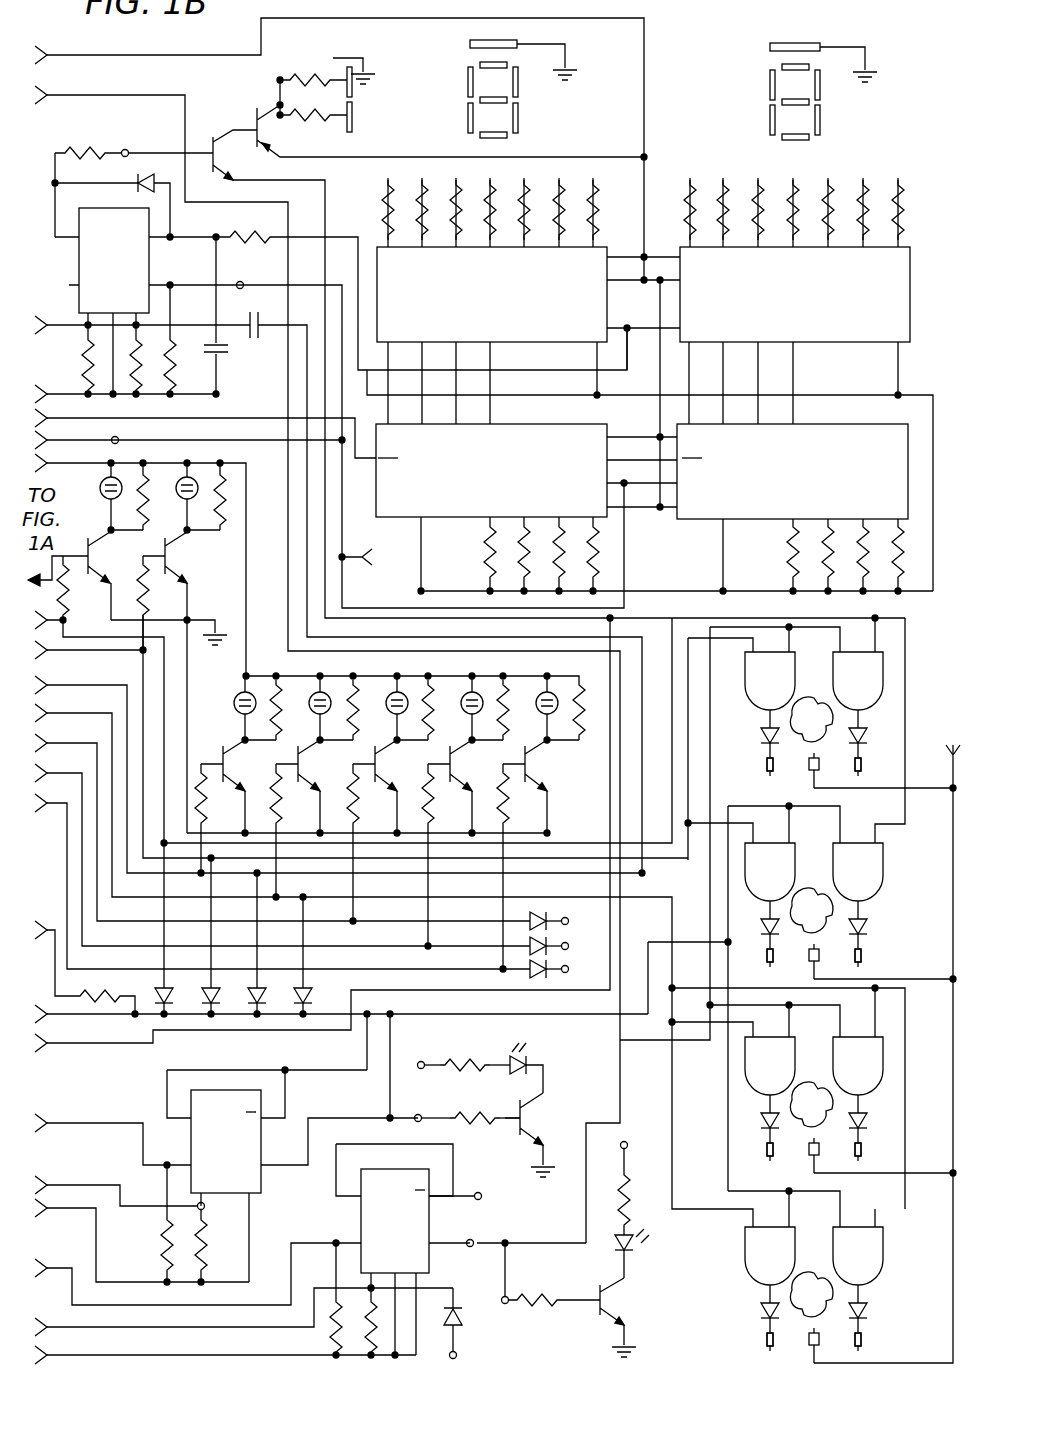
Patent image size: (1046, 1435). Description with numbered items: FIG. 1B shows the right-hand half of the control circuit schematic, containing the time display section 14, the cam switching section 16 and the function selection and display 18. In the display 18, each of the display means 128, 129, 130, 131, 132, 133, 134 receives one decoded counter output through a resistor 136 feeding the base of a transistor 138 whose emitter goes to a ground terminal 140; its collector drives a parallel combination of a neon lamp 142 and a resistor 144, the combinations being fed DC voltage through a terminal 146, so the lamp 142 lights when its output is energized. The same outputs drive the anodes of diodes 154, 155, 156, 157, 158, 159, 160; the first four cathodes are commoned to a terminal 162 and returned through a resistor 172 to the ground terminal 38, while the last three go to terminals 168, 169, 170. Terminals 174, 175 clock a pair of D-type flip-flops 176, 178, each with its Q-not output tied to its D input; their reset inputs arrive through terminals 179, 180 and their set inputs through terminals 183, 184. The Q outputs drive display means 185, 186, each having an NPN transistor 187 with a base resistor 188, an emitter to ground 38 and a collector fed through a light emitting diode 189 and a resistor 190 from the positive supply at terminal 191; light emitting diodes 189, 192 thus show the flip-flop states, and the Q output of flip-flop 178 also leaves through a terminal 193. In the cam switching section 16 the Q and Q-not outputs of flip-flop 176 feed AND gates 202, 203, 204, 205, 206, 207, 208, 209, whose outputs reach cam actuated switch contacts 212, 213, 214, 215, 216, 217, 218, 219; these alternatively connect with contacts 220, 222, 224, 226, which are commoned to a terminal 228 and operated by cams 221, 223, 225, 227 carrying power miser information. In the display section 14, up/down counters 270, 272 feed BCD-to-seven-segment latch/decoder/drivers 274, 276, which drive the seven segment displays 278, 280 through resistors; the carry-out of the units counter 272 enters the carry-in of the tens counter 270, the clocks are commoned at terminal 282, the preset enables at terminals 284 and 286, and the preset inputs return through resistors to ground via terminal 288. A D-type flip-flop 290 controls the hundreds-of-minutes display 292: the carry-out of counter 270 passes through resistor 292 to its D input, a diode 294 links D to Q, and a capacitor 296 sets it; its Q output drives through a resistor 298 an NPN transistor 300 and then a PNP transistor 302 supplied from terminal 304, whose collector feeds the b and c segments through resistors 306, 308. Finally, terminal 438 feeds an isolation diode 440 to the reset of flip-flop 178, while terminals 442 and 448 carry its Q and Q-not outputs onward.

The time display section 14 is at (684, 88).
The cam switching section 16 is at (909, 917).
The function selection and display 18 is at (216, 691).
The ground terminal 38 is at (546, 1168).
The display means 128 is at (124, 559).
The display means 129 is at (200, 559).
The display means 130 is at (260, 777).
The display means 131 is at (335, 777).
The display means 132 is at (412, 777).
The display means 133 is at (487, 777).
The display means 134 is at (562, 777).
The resistor 136 is at (72, 606).
The transistor 138 is at (104, 580).
The ground terminal 140 is at (200, 622).
The neon lamp 142 is at (118, 478).
The resistor 144 is at (146, 502).
The terminal 146 is at (58, 466).
The diode 154 is at (172, 996).
The diode 155 is at (219, 996).
The diode 156 is at (265, 996).
The diode 157 is at (305, 996).
The diode 158 is at (538, 918).
The diode 159 is at (528, 942).
The diode 160 is at (532, 976).
The terminal 162 is at (46, 1017).
The terminal 168 is at (568, 924).
The terminal 169 is at (568, 949).
The terminal 170 is at (568, 972).
The resistor 172 is at (92, 998).
The terminal 174 is at (52, 1126).
The terminal 175 is at (52, 1271).
The D-type flip-flop 176 is at (242, 1154).
The D-type flip-flop 178 is at (410, 1231).
The terminal 179 is at (52, 1188).
The terminal 180 is at (50, 1330).
The terminal 183 is at (46, 1212).
The terminal 184 is at (46, 1358).
The display means 185 is at (558, 1117).
The display means 186 is at (640, 1306).
The NPN transistor 187 is at (518, 1126).
The resistor 188 is at (478, 1114).
The light emitting diode 189 is at (514, 1072).
The resistor 190 is at (474, 1060).
The terminal 191 is at (428, 1060).
The light emitting diode 192 is at (614, 1240).
The terminal 193 is at (327, 664).
The AND gate 202 is at (770, 714).
The AND gate 203 is at (858, 714).
The AND gate 204 is at (770, 905).
The AND gate 205 is at (858, 905).
The AND gate 206 is at (770, 1099).
The AND gate 207 is at (858, 1099).
The AND gate 208 is at (770, 1289).
The AND gate 209 is at (858, 1289).
The cam actuated switch contact 212 is at (765, 762).
The cam actuated switch contact 213 is at (863, 762).
The cam actuated switch contact 214 is at (766, 954).
The cam actuated switch contact 215 is at (863, 953).
The cam actuated switch contact 216 is at (766, 1152).
The cam actuated switch contact 217 is at (863, 1150).
The cam actuated switch contact 218 is at (766, 1343).
The cam actuated switch contact 219 is at (863, 1341).
The contact 220 is at (808, 772).
The cam 221 is at (810, 698).
The contact 222 is at (808, 963).
The cam 223 is at (810, 889).
The contact 224 is at (808, 1157).
The cam 225 is at (810, 1083).
The contact 226 is at (808, 1347).
The cam 227 is at (810, 1273).
The terminal 228 is at (948, 740).
The binary decimal up/down counter 270 is at (492, 480).
The binary decimal up/down counter 272 is at (800, 480).
The BCD-to-7 segment latch/decoder/driver 274 is at (494, 304).
The BCD-to-7 segment latch/decoder/driver 276 is at (807, 304).
The seven segment display 278 is at (570, 107).
The seven segment display 280 is at (875, 107).
The terminal 282 is at (372, 566).
The terminal 284 is at (46, 1045).
The terminal 286 is at (58, 444).
The terminal 288 is at (38, 390).
The D-type flip-flop 290 is at (125, 272).
The light emitting diode display 292 is at (268, 245).
The diode 294 is at (140, 183).
The capacitor 296 is at (272, 312).
The resistor 298 is at (88, 152).
The NPN transistor 300 is at (200, 140).
The PNP transistor 302 is at (232, 112).
The terminal 304 is at (60, 58).
The resistor 306 is at (312, 76).
The resistor 308 is at (306, 122).
The terminal 438 is at (458, 1358).
The isolation diode 440 is at (462, 1310).
The terminal 442 is at (470, 1240).
The terminal 448 is at (482, 1199).